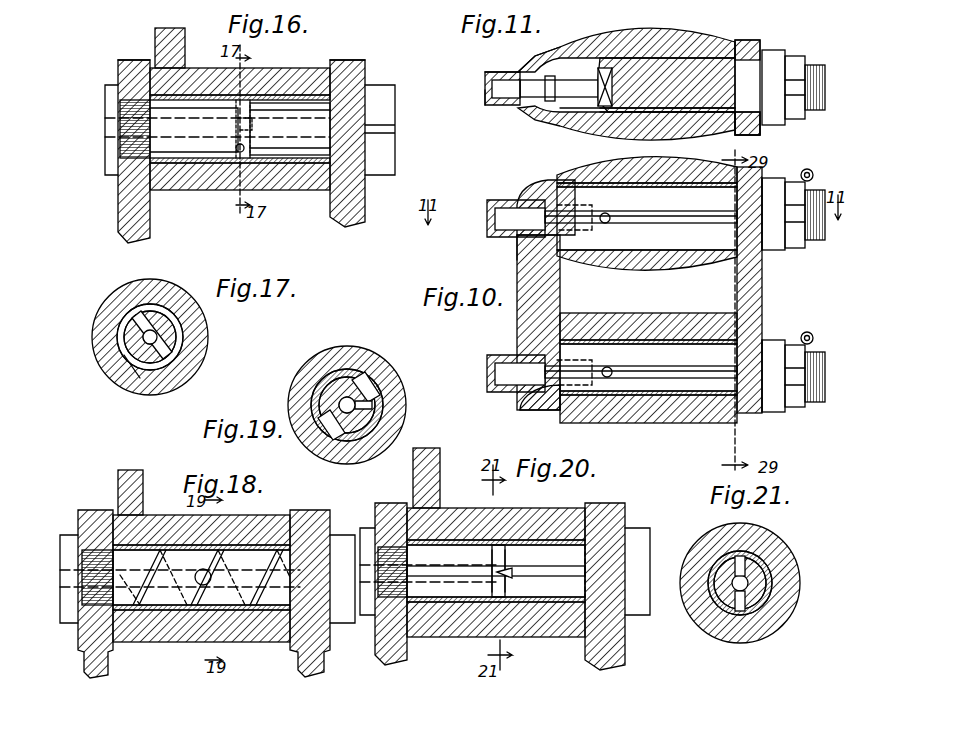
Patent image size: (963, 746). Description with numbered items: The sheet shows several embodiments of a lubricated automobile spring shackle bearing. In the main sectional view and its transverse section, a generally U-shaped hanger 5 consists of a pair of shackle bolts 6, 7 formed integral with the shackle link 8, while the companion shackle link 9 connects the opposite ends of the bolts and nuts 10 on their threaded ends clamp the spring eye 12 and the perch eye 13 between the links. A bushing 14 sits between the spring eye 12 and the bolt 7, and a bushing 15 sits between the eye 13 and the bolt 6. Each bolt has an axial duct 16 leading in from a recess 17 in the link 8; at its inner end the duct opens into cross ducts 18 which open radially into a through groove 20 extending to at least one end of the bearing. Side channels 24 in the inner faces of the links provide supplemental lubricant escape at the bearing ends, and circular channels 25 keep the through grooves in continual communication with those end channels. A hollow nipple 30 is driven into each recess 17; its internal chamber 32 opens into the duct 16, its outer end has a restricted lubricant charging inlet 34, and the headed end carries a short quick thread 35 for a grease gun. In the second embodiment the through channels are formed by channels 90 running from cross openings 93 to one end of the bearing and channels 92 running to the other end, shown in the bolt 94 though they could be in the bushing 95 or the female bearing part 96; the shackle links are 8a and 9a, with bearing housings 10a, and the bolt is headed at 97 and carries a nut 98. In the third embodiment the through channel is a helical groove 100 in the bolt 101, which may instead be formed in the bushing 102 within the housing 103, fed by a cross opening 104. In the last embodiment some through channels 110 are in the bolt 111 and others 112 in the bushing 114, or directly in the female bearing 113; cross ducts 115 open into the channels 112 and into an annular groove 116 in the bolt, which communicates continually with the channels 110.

In FIG. 10, the hanger 5 is at (508, 257).
In FIG. 10, the shackle bolt 6 is at (590, 195).
In FIG. 10, the shackle bolt 7 is at (572, 422).
In FIG. 10, the shackle link 8 is at (517, 320).
In FIG. 10, the companion shackle link 9 is at (762, 297).
In FIG. 10, the nut 10 is at (776, 190).
In FIG. 10, the spring eye 12 is at (632, 420).
In FIG. 11, the eye 13 is at (700, 56).
In FIG. 10, the eye 13 is at (664, 166).
In FIG. 10, the bushing 14 is at (682, 400).
In FIG. 11, the bushing 15 is at (745, 55).
In FIG. 10, the bushing 15 is at (598, 262).
In FIG. 11, the axial drilling or duct 16 is at (580, 85).
In FIG. 10, the axial drilling or duct 16 is at (560, 200).
In FIG. 11, the recess or counterbore 17 is at (520, 60).
In FIG. 10, the recess or counterbore 17 is at (530, 184).
In FIG. 11, the cross duct or drilling 18 is at (578, 125).
In FIG. 10, the cross duct or drilling 18 is at (606, 213).
In FIG. 11, the through groove 20 is at (695, 120).
In FIG. 10, the through groove 20 is at (684, 206).
In FIG. 11, the side channel or groove 24 is at (752, 128).
In FIG. 10, the side channel or groove 24 is at (772, 245).
In FIG. 11, the circular channel 25 is at (772, 65).
In FIG. 11, the nipple 30 is at (490, 84).
In FIG. 10, the nipple 30 is at (487, 215).
In FIG. 11, the internal chamber 32 is at (500, 95).
In FIG. 11, the lubricant charging inlet 34 is at (488, 96).
In FIG. 11, the thread 35 is at (500, 70).
In FIG. 16, the shackle link 8a is at (128, 219).
In FIG. 16, the shackle link 9a is at (355, 208).
In FIG. 16, the bearing housing 10a is at (140, 52).
In FIG. 16, the channel 90 is at (282, 110).
In FIG. 16, the channel 92 is at (185, 145).
In FIG. 17, the channel 92 is at (132, 320).
In FIG. 16, the cross opening 93 is at (246, 148).
In FIG. 17, the cross opening 93 is at (125, 330).
In FIG. 16, the bolt 94 is at (325, 130).
In FIG. 17, the bolt 94 is at (128, 385).
In FIG. 16, the bushing 95 is at (232, 165).
In FIG. 17, the bushing 95 is at (140, 305).
In FIG. 16, the female bearing part 96 is at (295, 185).
In FIG. 17, the female bearing part 96 is at (158, 285).
In FIG. 16, the head 97 is at (108, 165).
In FIG. 16, the nut 98 is at (385, 151).
In FIG. 19, the helical groove 100 is at (372, 388).
In FIG. 18, the helical groove 100 is at (140, 575).
In FIG. 19, the bolt 101 is at (315, 395).
In FIG. 18, the bolt 101 is at (235, 598).
In FIG. 19, the bushing 102 is at (372, 372).
In FIG. 18, the bushing 102 is at (262, 545).
In FIG. 19, the housing 103 is at (330, 352).
In FIG. 18, the housing 103 is at (238, 520).
In FIG. 19, the cross opening 104 is at (348, 435).
In FIG. 18, the cross opening 104 is at (203, 588).
In FIG. 20, the through channel 110 is at (540, 574).
In FIG. 21, the through channel 110 is at (732, 585).
In FIG. 20, the bolt 111 is at (600, 560).
In FIG. 21, the bolt 111 is at (752, 605).
In FIG. 20, the through channel 112 is at (548, 541).
In FIG. 21, the through channel 112 is at (757, 553).
In FIG. 20, the female bearing 113 is at (520, 520).
In FIG. 21, the female bearing 113 is at (700, 615).
In FIG. 20, the bushing 114 is at (450, 540).
In FIG. 20, the cross duct 115 is at (492, 597).
In FIG. 21, the cross duct 115 is at (742, 565).
In FIG. 20, the annular groove 116 is at (492, 555).
In FIG. 21, the annular groove 116 is at (770, 587).